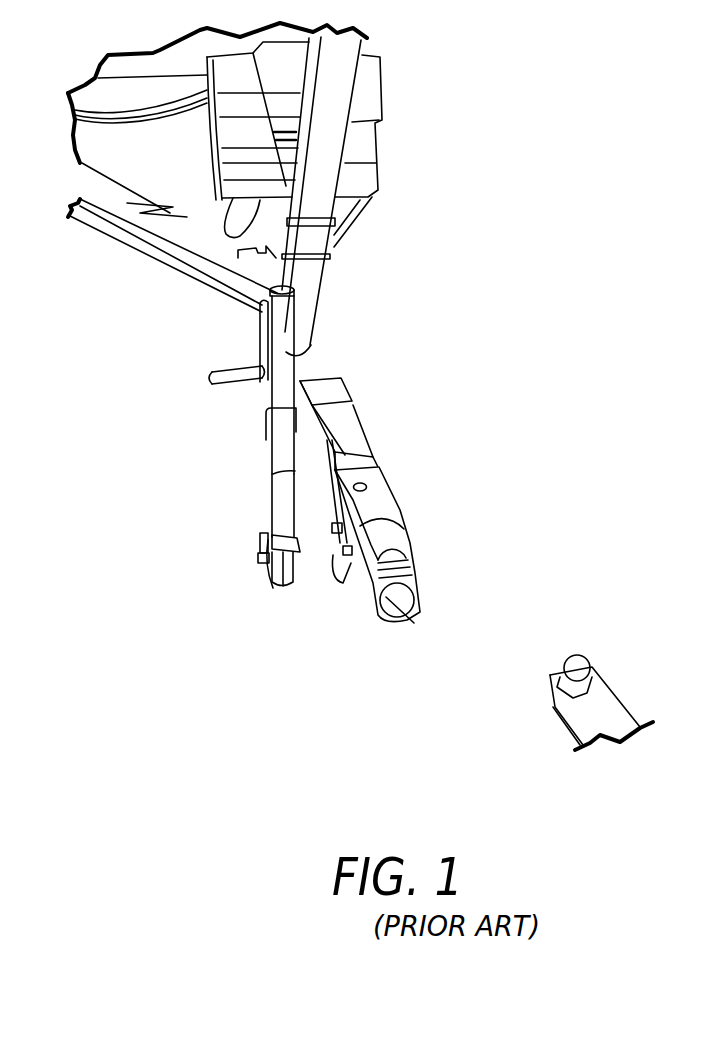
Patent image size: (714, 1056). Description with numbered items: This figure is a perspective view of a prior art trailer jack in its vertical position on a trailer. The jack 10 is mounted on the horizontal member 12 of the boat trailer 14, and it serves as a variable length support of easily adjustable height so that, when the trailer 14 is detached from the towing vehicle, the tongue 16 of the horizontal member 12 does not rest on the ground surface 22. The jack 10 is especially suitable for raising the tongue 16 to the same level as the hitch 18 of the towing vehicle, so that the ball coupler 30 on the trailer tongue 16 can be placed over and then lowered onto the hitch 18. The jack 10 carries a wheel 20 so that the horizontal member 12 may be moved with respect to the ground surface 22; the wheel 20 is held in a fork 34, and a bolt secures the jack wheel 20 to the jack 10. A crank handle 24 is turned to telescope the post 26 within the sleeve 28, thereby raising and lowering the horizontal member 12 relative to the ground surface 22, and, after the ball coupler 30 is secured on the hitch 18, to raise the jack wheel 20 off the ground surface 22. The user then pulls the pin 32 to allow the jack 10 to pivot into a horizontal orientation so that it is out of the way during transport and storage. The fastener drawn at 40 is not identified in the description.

The jack 10 is at (118, 422).
The horizontal member 12 is at (352, 433).
The boat trailer 14 is at (145, 256).
The tongue 16 is at (411, 582).
The hitch 18 is at (572, 662).
The wheel 20 is at (283, 587).
The ground surface 22 is at (207, 683).
The crank handle 24 is at (210, 374).
The post 26 is at (283, 487).
The sleeve 28 is at (280, 343).
The ball coupler 30 is at (413, 625).
The pin 32 is at (263, 425).
The fork 34 is at (261, 540).
The fastener 40 is at (257, 559).